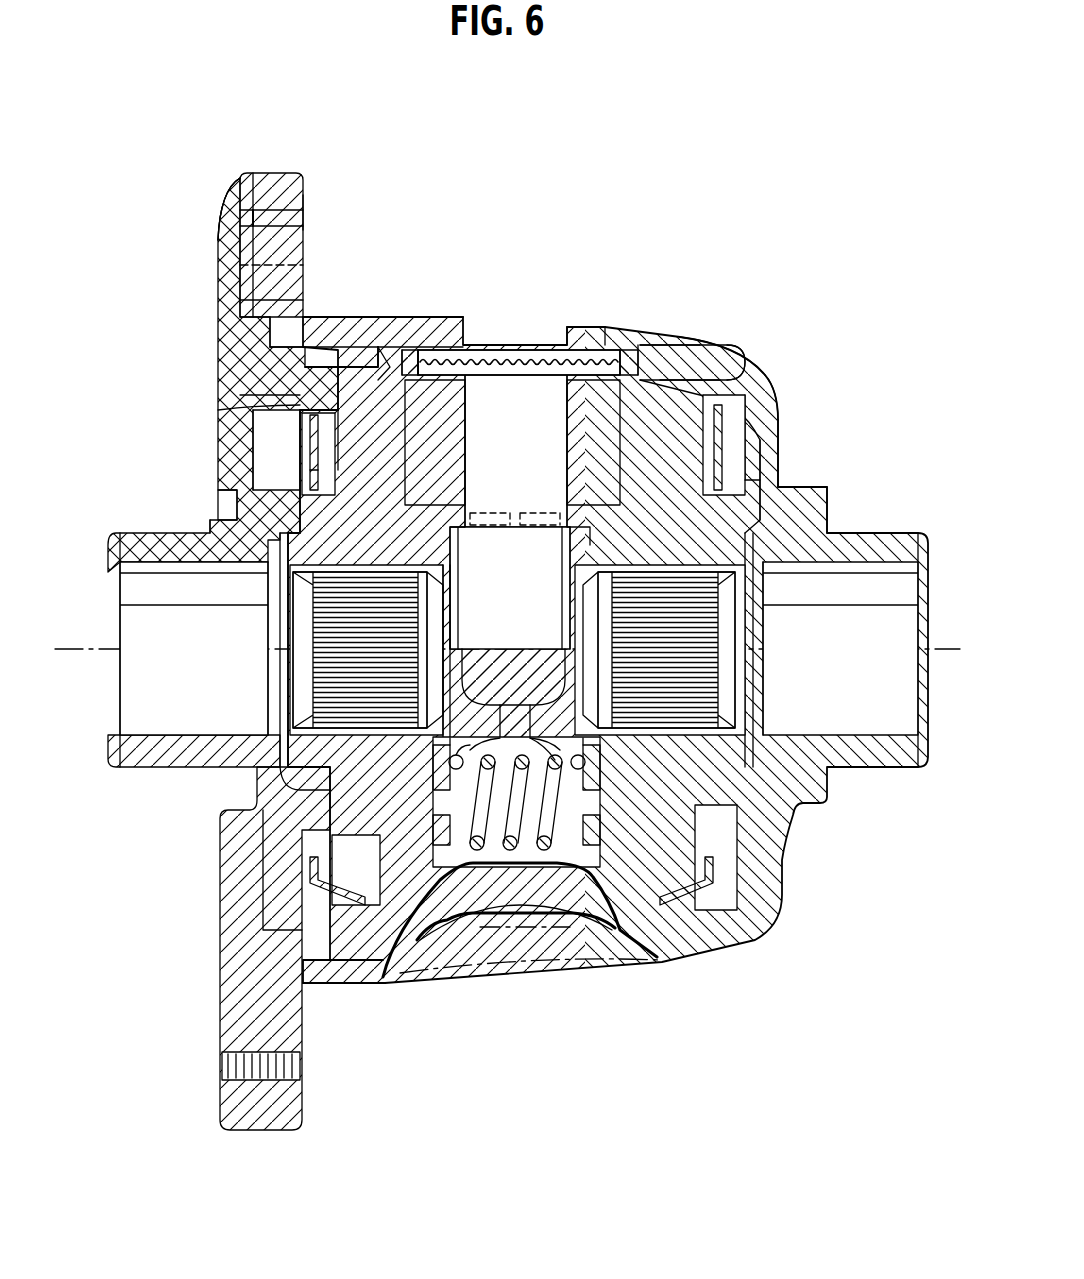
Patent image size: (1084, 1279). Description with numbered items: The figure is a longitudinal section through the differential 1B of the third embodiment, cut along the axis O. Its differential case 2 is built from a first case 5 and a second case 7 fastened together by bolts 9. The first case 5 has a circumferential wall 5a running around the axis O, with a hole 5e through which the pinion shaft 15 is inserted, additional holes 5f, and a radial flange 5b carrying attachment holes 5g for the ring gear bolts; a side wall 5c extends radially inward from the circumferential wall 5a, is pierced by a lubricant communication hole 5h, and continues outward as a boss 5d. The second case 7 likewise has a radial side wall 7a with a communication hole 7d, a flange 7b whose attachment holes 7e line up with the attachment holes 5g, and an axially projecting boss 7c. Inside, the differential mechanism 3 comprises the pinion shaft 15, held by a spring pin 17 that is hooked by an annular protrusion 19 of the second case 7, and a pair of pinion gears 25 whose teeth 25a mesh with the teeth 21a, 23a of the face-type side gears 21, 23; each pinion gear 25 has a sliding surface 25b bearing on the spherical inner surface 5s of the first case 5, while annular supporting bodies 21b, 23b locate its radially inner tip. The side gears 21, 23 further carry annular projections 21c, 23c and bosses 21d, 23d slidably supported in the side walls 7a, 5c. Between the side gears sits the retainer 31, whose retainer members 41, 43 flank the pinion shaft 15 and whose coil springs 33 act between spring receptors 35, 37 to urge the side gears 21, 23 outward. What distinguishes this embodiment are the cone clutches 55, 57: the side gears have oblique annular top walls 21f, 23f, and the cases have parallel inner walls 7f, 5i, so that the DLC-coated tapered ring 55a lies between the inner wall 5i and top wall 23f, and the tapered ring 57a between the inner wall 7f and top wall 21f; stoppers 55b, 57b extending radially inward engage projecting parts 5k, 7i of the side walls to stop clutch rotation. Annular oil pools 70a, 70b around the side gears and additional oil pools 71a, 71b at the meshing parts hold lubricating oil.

The differential 1B is at (767, 148).
The differential case 2 is at (251, 148).
The differential mechanism 3 is at (610, 335).
The first case 5 is at (646, 248).
The circumferential wall 5a is at (374, 330).
The flange 5b is at (295, 172).
The side wall 5c is at (770, 398).
The boss 5d is at (905, 533).
The hole 5e is at (547, 330).
The additional hole 5f is at (430, 955).
The attachment hole 5g is at (306, 210).
The lubricant communication hole 5h is at (780, 410).
The inner wall 5i is at (745, 372).
The projecting part 5k is at (598, 545).
The inner surface 5s is at (586, 328).
The second case 7 is at (208, 320).
The side wall 7a is at (250, 382).
The flange 7b is at (226, 182).
The boss 7c is at (106, 533).
The communication hole 7d is at (315, 413).
The attachment hole 7e is at (250, 228).
The inner wall 7f is at (285, 392).
The projecting part 7i is at (445, 555).
The bolt 9 is at (303, 1080).
The pinion shaft 15 is at (530, 638).
The spring pin 17 is at (568, 340).
The annular protrusion 19 is at (326, 348).
The side gear 21 is at (358, 360).
The teeth 21a is at (386, 378).
The annular supporting body 21b is at (340, 470).
The annular projection 21c is at (216, 490).
The boss 21d is at (203, 526).
The annular top wall 21f is at (270, 345).
The side gear 23 is at (707, 340).
The teeth 23a is at (690, 342).
The annular supporting body 23b is at (752, 465).
The annular projection 23c is at (740, 518).
The boss 23d is at (742, 525).
The annular top wall 23f is at (692, 372).
The pinion gear 25 is at (505, 332).
The teeth 25a is at (415, 350).
The sliding surface 25b is at (452, 340).
The retainer 31 is at (550, 870).
The coil spring 33 is at (503, 893).
The spring receptor 35 is at (458, 925).
The spring receptor 37 is at (592, 862).
The retainer member 41 is at (305, 800).
The retainer member 43 is at (763, 860).
The cone clutch 55 is at (600, 462).
The annular tapered ring 55a is at (770, 425).
The stopper 55b is at (780, 460).
The cone clutch 57 is at (465, 425).
The annular tapered ring 57a is at (312, 440).
The stopper 57b is at (312, 472).
The annular oil pool 70a is at (384, 362).
The annular oil pool 70b is at (640, 352).
The oil pool 71a is at (330, 442).
The oil pool 71b is at (735, 430).
The axis O is at (68, 652).